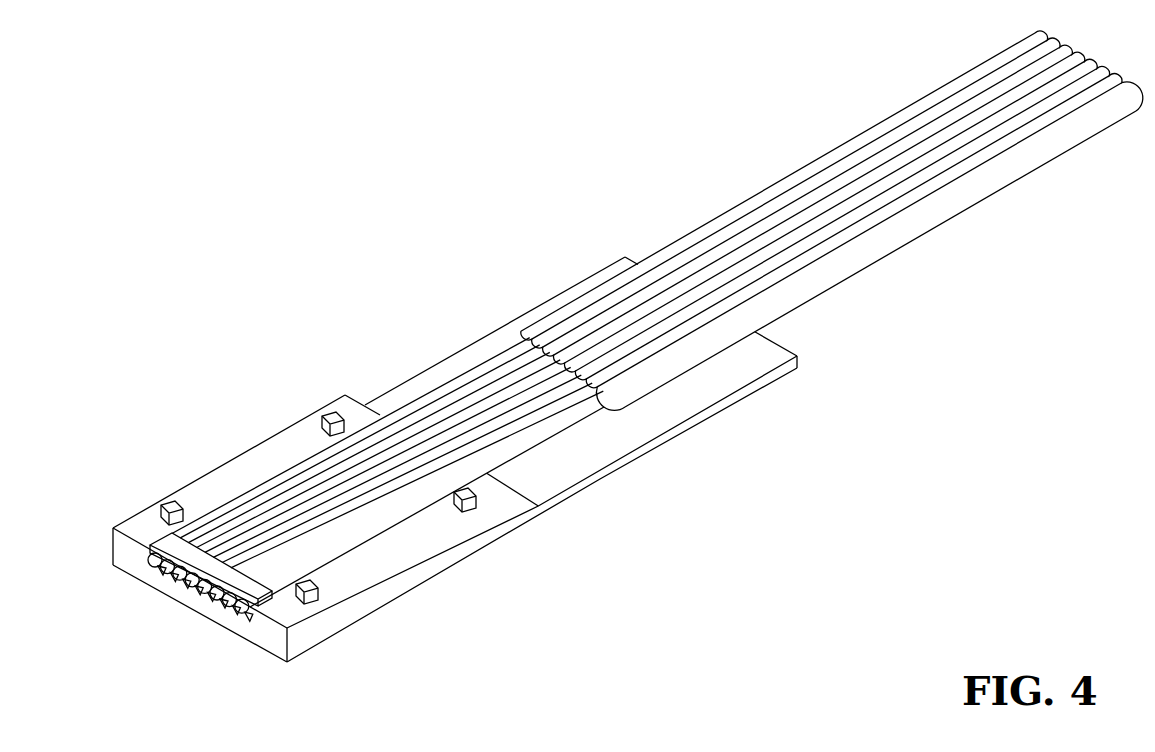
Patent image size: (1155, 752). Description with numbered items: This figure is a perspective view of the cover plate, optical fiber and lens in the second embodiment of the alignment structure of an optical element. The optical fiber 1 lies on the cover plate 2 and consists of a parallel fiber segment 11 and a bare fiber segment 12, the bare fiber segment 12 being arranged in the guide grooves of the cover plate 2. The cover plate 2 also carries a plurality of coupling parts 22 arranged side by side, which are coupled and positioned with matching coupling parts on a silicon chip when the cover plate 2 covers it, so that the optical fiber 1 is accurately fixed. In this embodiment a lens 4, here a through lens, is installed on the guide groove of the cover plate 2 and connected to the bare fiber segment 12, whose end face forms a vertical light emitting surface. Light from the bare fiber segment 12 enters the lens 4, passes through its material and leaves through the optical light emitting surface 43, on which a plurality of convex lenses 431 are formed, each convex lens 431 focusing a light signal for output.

The optical fiber 1 is at (512, 203).
The parallel fiber segment 11 is at (574, 302).
The bare fiber segment 12 is at (497, 358).
The cover plate 2 is at (438, 560).
The coupling parts 22 is at (322, 420).
The lens 4 is at (172, 545).
The optical light emitting surface 43 is at (250, 604).
The convex lenses 431 is at (218, 590).